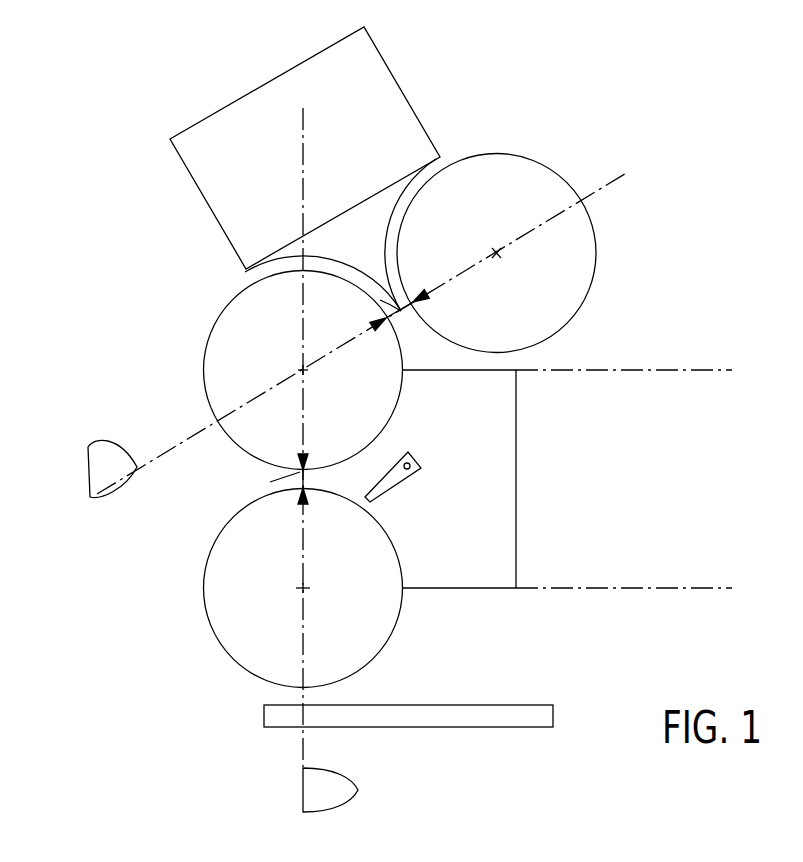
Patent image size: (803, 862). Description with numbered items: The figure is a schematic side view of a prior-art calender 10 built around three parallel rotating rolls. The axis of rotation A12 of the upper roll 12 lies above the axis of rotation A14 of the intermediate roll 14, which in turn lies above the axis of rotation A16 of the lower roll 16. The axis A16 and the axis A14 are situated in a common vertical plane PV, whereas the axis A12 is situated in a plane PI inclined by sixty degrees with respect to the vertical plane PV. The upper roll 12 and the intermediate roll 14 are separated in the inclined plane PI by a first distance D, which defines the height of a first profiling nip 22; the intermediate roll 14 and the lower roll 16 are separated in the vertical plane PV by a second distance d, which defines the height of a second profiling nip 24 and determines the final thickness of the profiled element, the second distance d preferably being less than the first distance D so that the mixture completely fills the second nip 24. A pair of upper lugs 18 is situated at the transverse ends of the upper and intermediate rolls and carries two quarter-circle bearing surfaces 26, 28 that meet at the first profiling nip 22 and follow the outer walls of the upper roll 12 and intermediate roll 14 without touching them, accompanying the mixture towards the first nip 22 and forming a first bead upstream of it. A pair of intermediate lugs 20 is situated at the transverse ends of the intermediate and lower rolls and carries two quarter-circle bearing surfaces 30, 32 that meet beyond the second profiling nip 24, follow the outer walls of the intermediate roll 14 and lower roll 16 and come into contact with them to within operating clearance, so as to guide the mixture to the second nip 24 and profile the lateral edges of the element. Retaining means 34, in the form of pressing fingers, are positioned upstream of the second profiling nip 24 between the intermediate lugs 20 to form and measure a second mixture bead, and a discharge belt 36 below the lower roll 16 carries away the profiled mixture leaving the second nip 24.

The calender 10 is at (100, 671).
The upper roll 12 is at (596, 272).
The intermediate roll 14 is at (204, 362).
The lower roll 16 is at (204, 587).
The upper lugs 18 is at (403, 90).
The intermediate lugs 20 is at (517, 485).
The first profiling nip 22 is at (370, 255).
The second profiling nip 24 is at (255, 486).
The quarter-circle bearing surface 26 is at (400, 190).
The quarter-circle bearing surface 28 is at (267, 262).
The quarter-circle bearing surface 30 is at (400, 400).
The quarter-circle bearing surface 32 is at (400, 562).
The retaining means 34 is at (410, 479).
The discharge belt 36 is at (491, 703).
The axis of rotation of the upper roll A12 is at (497, 253).
The axis of rotation of the intermediate roll A14 is at (303, 370).
The axis of rotation of the lower roll A16 is at (300, 588).
The first distance D is at (400, 316).
The second distance d is at (315, 479).
The inclined plane PI is at (112, 468).
The vertical plane PV is at (330, 790).